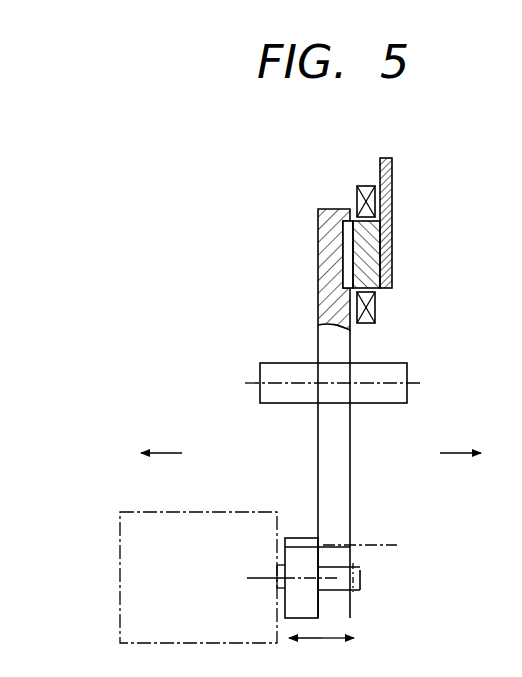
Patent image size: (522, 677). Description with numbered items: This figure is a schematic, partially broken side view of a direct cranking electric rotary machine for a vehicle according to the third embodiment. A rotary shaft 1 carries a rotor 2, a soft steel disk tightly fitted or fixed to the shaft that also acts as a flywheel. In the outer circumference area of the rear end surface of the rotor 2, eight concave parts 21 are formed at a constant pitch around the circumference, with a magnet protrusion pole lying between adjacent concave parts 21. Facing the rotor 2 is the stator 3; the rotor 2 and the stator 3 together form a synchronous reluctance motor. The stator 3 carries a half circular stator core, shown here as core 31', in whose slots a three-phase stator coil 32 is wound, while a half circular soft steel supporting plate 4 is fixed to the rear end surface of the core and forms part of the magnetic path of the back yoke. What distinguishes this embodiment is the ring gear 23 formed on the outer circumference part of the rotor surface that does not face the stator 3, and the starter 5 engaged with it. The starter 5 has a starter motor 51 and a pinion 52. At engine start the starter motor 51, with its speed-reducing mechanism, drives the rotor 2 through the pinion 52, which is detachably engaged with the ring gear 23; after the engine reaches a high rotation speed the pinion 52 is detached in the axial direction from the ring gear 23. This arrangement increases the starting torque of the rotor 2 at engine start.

The rotary shaft 1 is at (285, 397).
The rotor 2 is at (323, 343).
The concave parts 21 is at (347, 250).
The ring gear 23 is at (343, 542).
The stator 3 is at (366, 182).
The yoke / magnet 31' is at (406, 254).
The stator coil 32 is at (377, 327).
The supporting plate 4 is at (392, 212).
The starter 5 is at (113, 630).
The starter motor 51 is at (205, 527).
The pinion 52 is at (297, 553).